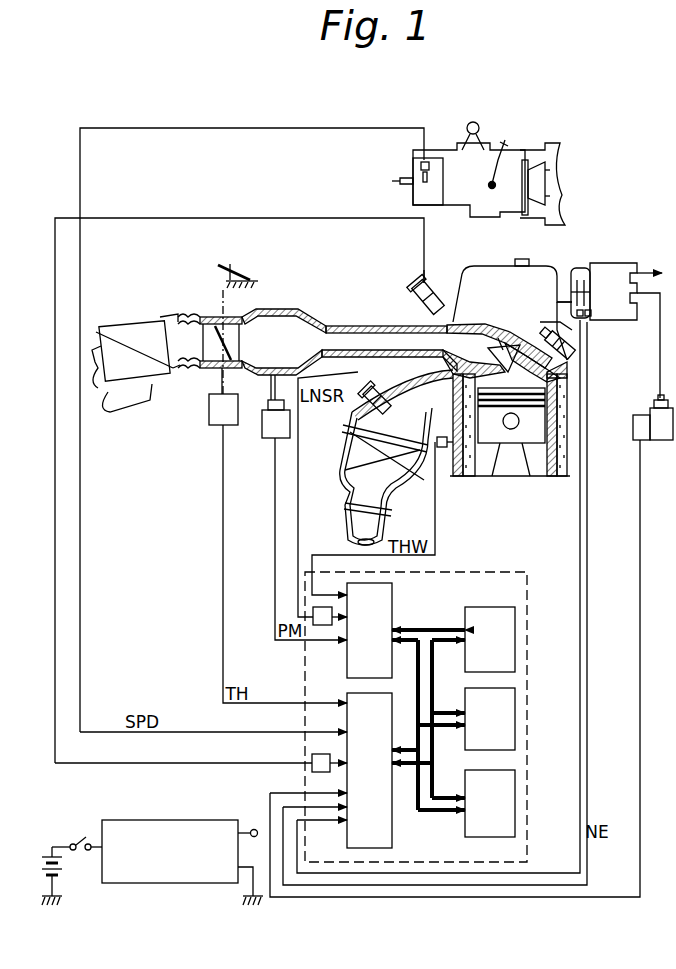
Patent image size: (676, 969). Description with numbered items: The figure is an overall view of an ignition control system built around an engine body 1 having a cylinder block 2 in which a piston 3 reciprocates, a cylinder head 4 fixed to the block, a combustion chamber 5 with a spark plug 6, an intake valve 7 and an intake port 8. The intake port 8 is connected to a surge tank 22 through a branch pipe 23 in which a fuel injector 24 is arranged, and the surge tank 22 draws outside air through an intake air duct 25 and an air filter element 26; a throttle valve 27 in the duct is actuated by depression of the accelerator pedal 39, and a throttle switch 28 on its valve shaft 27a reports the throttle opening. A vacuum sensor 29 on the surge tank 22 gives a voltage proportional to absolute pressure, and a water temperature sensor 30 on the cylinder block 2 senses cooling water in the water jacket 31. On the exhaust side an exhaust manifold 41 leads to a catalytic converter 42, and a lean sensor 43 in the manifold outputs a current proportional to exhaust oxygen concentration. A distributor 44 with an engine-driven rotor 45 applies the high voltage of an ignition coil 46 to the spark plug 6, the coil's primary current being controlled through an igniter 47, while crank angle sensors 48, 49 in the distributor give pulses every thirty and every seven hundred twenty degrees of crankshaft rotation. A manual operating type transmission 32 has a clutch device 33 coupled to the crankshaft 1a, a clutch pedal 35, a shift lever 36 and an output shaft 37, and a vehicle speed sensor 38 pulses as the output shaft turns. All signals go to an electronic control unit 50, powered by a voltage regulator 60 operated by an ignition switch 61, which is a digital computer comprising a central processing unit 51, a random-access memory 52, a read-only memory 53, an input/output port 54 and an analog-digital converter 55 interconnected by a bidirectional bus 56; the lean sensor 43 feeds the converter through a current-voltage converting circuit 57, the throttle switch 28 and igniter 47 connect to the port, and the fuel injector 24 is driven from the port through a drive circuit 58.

The engine body 1 is at (515, 495).
The crankshaft 1a is at (548, 185).
The cylinder block 2 is at (566, 470).
The piston 3 is at (486, 445).
The cylinder head 4 is at (552, 370).
The combustion chamber 5 is at (516, 387).
The spark plug 6 is at (548, 333).
The intake valve 7 is at (503, 340).
The intake port 8 is at (470, 336).
The surge tank 22 is at (285, 312).
The branch pipe 23 is at (368, 324).
The fuel injector 24 is at (415, 295).
The intake air duct 25 is at (214, 372).
The air filter element 26 is at (135, 345).
The throttle valve 27 is at (224, 340).
The valve shaft 27a is at (232, 342).
The throttle switch 28 is at (209, 414).
The vacuum sensor 29 is at (270, 432).
The water temperature sensor 30 is at (444, 450).
The water jacket 31 is at (545, 472).
The manual operating type transmission 32 is at (464, 195).
The clutch device 33 is at (532, 160).
The clutch pedal 35 is at (505, 140).
The shift lever 36 is at (475, 122).
The output shaft 37 is at (402, 176).
The vehicle speed sensor 38 is at (428, 162).
The accelerator pedal 39 is at (230, 268).
The exhaust manifold 41 is at (396, 392).
The catalytic converter 42 is at (342, 450).
The lean sensor 43 is at (386, 388).
The distributor 44 is at (620, 266).
The rotor 45 is at (574, 268).
The ignition coil 46 is at (663, 440).
The igniter 47 is at (633, 426).
The crank angle sensor 48 is at (582, 316).
The crank angle sensor 49 is at (590, 316).
The electronic control unit 50 is at (455, 571).
The central processing unit 51 is at (470, 612).
The random-access memory 52 is at (470, 692).
The read-only memory 53 is at (470, 776).
The input/output port 54 is at (380, 838).
The analog-digital converter 55 is at (388, 600).
The bidirectional bus 56 is at (432, 805).
The current-voltage converting circuit 57 is at (322, 626).
The drive circuit 58 is at (312, 760).
The voltage regulator 60 is at (170, 826).
The ignition switch 61 is at (82, 838).